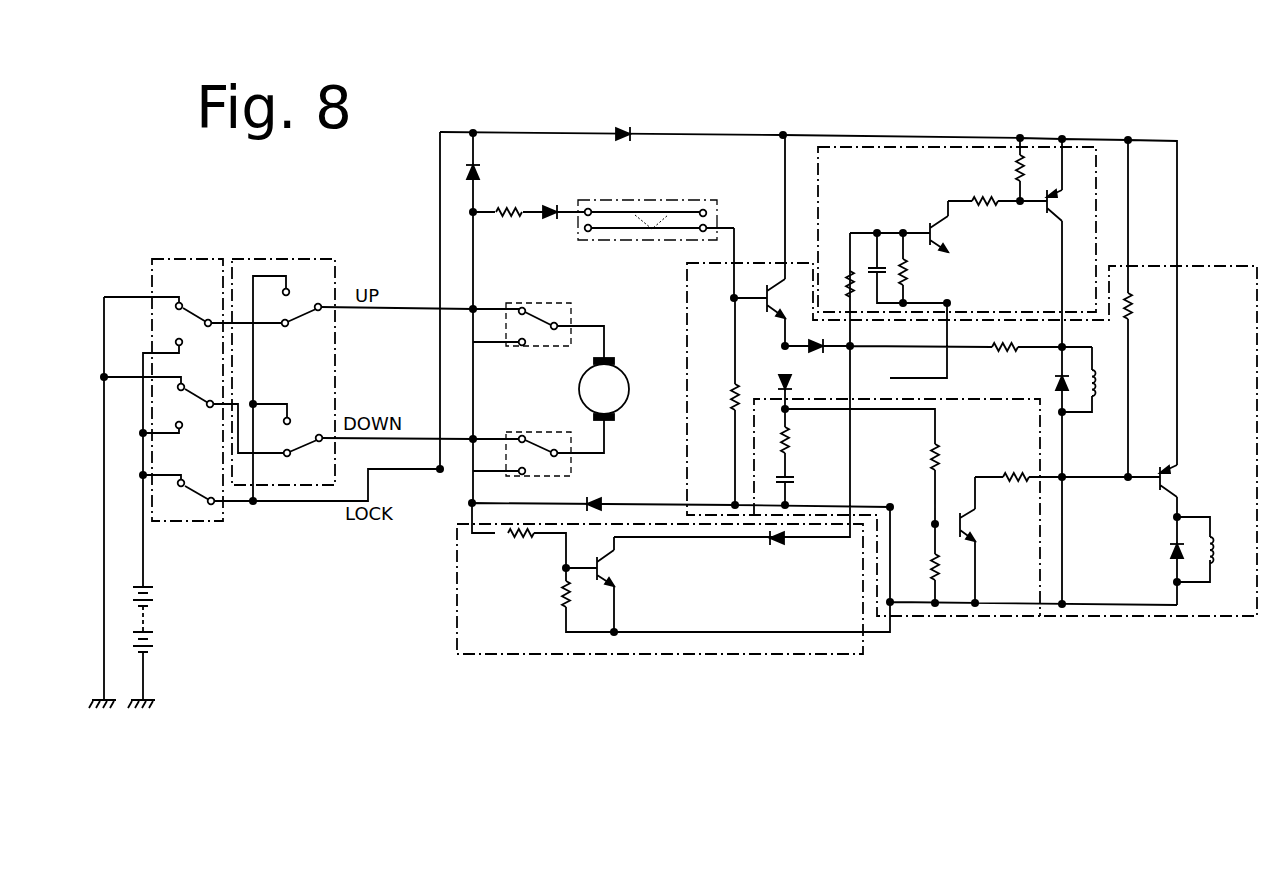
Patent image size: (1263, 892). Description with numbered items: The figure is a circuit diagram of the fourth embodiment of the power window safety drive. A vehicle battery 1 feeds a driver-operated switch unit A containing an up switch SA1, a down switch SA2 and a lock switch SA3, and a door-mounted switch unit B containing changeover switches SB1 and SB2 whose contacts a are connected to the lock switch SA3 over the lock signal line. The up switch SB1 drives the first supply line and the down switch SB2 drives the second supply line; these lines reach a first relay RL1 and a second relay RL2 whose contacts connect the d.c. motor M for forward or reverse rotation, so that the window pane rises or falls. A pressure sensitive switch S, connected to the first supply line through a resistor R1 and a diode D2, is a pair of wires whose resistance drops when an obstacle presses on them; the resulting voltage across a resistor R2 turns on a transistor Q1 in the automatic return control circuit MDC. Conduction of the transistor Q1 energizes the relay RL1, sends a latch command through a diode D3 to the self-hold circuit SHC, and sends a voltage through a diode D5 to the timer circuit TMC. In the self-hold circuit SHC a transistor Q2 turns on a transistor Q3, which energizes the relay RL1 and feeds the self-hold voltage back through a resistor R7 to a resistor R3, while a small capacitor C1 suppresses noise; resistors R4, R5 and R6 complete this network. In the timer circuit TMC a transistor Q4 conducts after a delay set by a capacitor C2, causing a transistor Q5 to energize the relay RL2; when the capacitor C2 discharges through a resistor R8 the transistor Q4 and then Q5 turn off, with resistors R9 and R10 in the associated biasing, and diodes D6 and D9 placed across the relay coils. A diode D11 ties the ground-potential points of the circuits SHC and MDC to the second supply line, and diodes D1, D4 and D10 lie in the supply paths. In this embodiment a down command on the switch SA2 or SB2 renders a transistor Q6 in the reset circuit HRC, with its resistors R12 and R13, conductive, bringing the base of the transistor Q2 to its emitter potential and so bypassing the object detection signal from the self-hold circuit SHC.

The battery 1 is at (152, 598).
The switch unit A is at (211, 257).
The switch unit B is at (324, 257).
The up switch SA1 is at (200, 316).
The down switch SA2 is at (198, 398).
The lock switch SA3 is at (202, 505).
The up switch SB1 is at (305, 330).
The down switch SB2 is at (310, 442).
The first relay RL1 is at (815, 339).
The second relay RL2 is at (873, 490).
The d.c. motor M is at (604, 389).
The pressure sensitive switch S is at (686, 204).
The self-hold circuit SHC is at (818, 190).
The automatic return control circuit MDC is at (688, 284).
The timer circuit TMC is at (1040, 542).
The reset circuit HRC is at (458, 550).
The diode D1 is at (627, 149).
The diode D2 is at (554, 202).
The diode D3 is at (821, 334).
The diode D4 is at (788, 551).
The diode D5 is at (798, 383).
The diode D6 is at (1047, 383).
The diode D9 is at (1160, 551).
The diode D10 is at (492, 181).
The diode D11 is at (610, 514).
The resistor R1 is at (510, 226).
The resistor R2 is at (722, 399).
The resistor R3 is at (838, 284).
The resistor R4 is at (915, 273).
The resistor R5 is at (985, 192).
The resistor R6 is at (1032, 168).
The resistor R7 is at (1005, 336).
The resistor R8 is at (947, 457).
The resistor R9 is at (947, 569).
The resistor R10 is at (1084, 402).
The resistor R12 is at (667, 495).
The resistor R13 is at (551, 595).
The capacitor C1 is at (883, 282).
The capacitor C2 is at (797, 480).
The transistor Q1 is at (789, 298).
The transistor Q2 is at (951, 234).
The transistor Q3 is at (1068, 205).
The transistor Q4 is at (982, 525).
The transistor Q5 is at (1182, 481).
The transistor Q6 is at (619, 568).